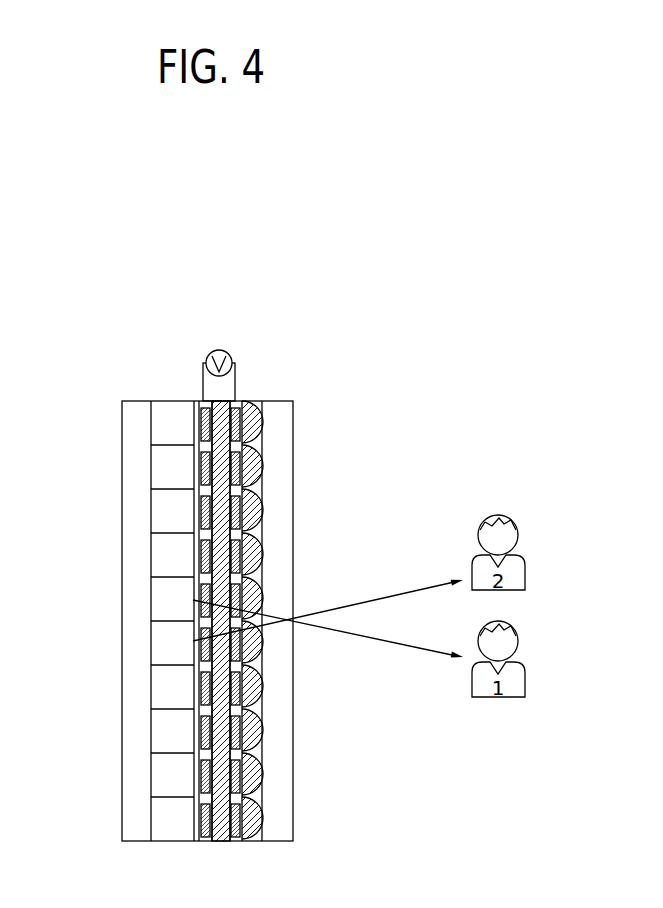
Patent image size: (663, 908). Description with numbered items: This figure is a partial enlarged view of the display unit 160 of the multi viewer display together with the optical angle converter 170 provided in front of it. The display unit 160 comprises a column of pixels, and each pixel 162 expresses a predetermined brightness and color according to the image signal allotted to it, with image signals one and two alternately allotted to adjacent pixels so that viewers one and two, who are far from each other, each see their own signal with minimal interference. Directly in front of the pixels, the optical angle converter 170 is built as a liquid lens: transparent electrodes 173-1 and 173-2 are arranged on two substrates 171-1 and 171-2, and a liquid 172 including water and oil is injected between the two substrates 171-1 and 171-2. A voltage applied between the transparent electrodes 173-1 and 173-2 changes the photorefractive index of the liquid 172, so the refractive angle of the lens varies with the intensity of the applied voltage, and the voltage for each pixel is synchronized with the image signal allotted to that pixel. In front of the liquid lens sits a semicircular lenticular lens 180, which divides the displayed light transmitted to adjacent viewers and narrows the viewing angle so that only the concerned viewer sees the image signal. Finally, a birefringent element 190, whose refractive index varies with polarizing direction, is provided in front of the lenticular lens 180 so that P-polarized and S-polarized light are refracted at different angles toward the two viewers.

The display unit 160 is at (135, 401).
The pixel 162 is at (157, 422).
The optical angle converter 170 is at (204, 540).
The substrate 171-1 is at (204, 755).
The substrate 171-2 is at (236, 797).
The liquid 172 is at (220, 540).
The transparent electrode 173-1 is at (199, 678).
The transparent electrode 173-2 is at (236, 732).
The lenticular lens 180 is at (259, 465).
The birefringent element 190 is at (287, 422).